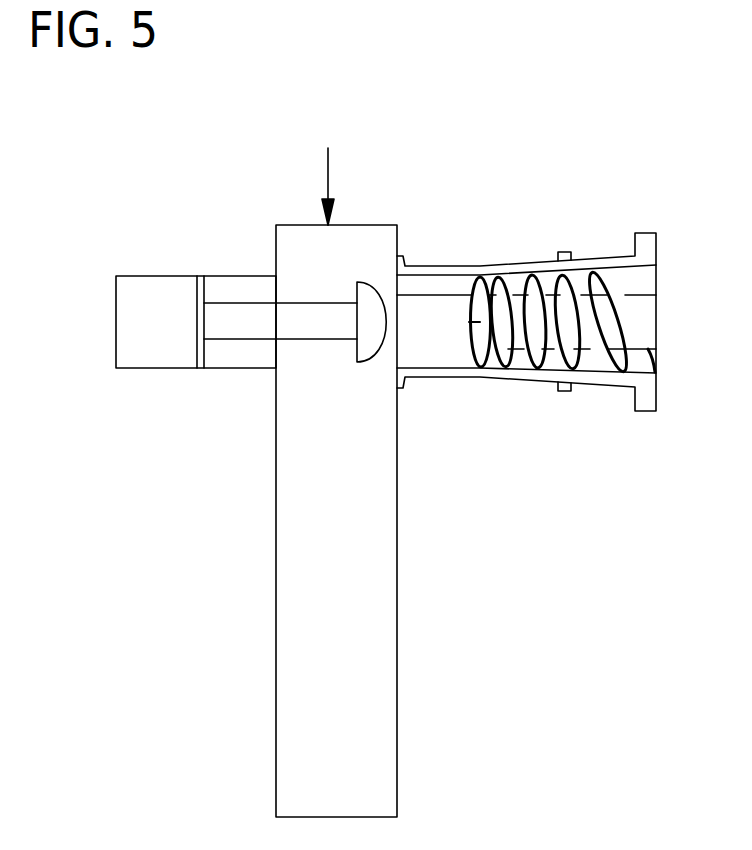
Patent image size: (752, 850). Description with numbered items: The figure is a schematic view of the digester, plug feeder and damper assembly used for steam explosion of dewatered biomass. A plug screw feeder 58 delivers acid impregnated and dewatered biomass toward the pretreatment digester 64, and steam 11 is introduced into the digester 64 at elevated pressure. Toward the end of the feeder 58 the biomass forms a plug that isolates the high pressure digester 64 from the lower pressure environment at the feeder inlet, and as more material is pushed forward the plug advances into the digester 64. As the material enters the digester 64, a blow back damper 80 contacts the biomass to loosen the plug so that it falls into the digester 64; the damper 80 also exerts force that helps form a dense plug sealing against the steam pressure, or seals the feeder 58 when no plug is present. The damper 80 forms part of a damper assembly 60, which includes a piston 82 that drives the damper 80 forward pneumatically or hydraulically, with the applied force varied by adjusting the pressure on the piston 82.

The steam 11 is at (328, 173).
The plug screw feeder 58 is at (602, 388).
The damper assembly 60 is at (147, 275).
The pretreatment digester 64 is at (397, 618).
The blow back damper 80 is at (358, 362).
The piston 82 is at (300, 302).